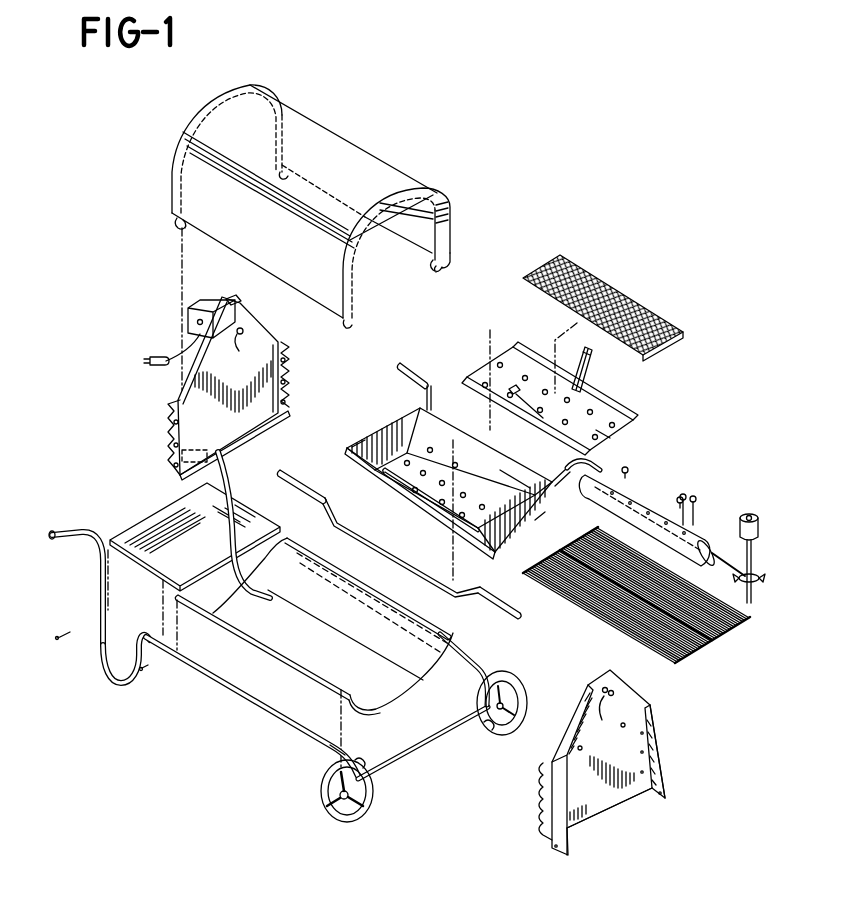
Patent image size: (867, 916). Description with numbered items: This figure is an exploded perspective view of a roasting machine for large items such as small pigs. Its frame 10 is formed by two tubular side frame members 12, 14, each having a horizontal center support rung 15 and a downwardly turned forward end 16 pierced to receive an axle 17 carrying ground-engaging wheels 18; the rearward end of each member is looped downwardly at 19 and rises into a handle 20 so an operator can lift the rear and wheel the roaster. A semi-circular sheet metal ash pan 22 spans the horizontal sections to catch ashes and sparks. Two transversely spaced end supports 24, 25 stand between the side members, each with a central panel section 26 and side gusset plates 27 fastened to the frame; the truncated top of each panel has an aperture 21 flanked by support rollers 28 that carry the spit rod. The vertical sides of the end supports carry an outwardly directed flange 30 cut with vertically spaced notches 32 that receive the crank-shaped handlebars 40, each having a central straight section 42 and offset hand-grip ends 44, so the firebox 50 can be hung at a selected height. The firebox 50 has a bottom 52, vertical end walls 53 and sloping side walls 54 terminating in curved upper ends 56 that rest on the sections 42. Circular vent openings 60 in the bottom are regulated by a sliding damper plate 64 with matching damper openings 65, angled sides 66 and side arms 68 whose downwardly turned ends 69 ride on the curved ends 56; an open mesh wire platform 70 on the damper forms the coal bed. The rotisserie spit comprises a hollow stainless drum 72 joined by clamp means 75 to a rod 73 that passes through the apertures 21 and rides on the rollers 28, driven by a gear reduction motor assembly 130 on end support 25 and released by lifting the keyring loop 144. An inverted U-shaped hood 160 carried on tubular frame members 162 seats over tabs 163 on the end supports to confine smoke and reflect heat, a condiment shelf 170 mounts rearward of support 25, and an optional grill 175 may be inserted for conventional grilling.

The frame 10 is at (356, 648).
The side frame member 12 is at (328, 748).
The side frame member 14 is at (478, 680).
The center support rung 15 is at (255, 708).
The downwardly turned forward end 16 is at (362, 767).
The axle 17 is at (452, 743).
The ground-engaging wheel 18 is at (526, 691).
The looped rearward end 19 is at (121, 685).
The handle 20 is at (67, 545).
The aperture 21 is at (241, 328).
The ash pan 22 is at (310, 647).
The end support 24 is at (620, 796).
The end support 25 is at (184, 368).
The central panel section 26 is at (596, 808).
The side gusset plate 27 is at (664, 774).
The support roller 28 is at (257, 364).
The outwardly directed flange 30 is at (296, 351).
The notch 32 is at (293, 399).
The handlebar 40 is at (401, 484).
The central straight section 42 is at (424, 589).
The offset end 44 is at (411, 363).
The firebox 50 is at (385, 420).
The bottom 52 is at (472, 504).
The end wall 53 is at (364, 443).
The sloping side wall 54 is at (518, 476).
The curved upper end 56 is at (478, 538).
The vent opening 60 is at (415, 484).
The damper plate 64 is at (634, 418).
The damper opening 65 is at (601, 431).
The damper side 66 is at (528, 366).
The side arm 68 is at (589, 366).
The downwardly turned arm end 69 is at (595, 353).
The open mesh wire platform 70 is at (603, 281).
The hollow drum 72 is at (698, 518).
The shaft or rod 73 is at (736, 591).
The clamp means 75 is at (719, 571).
The gear reduction motor assembly 130 is at (204, 297).
The keyring loop 144 is at (229, 301).
The hood 160 is at (328, 138).
The U-shaped tubular frame member 162 is at (450, 264).
The tab 163 is at (178, 400).
The condiment shelf 170 is at (165, 514).
The grill 175 is at (707, 653).